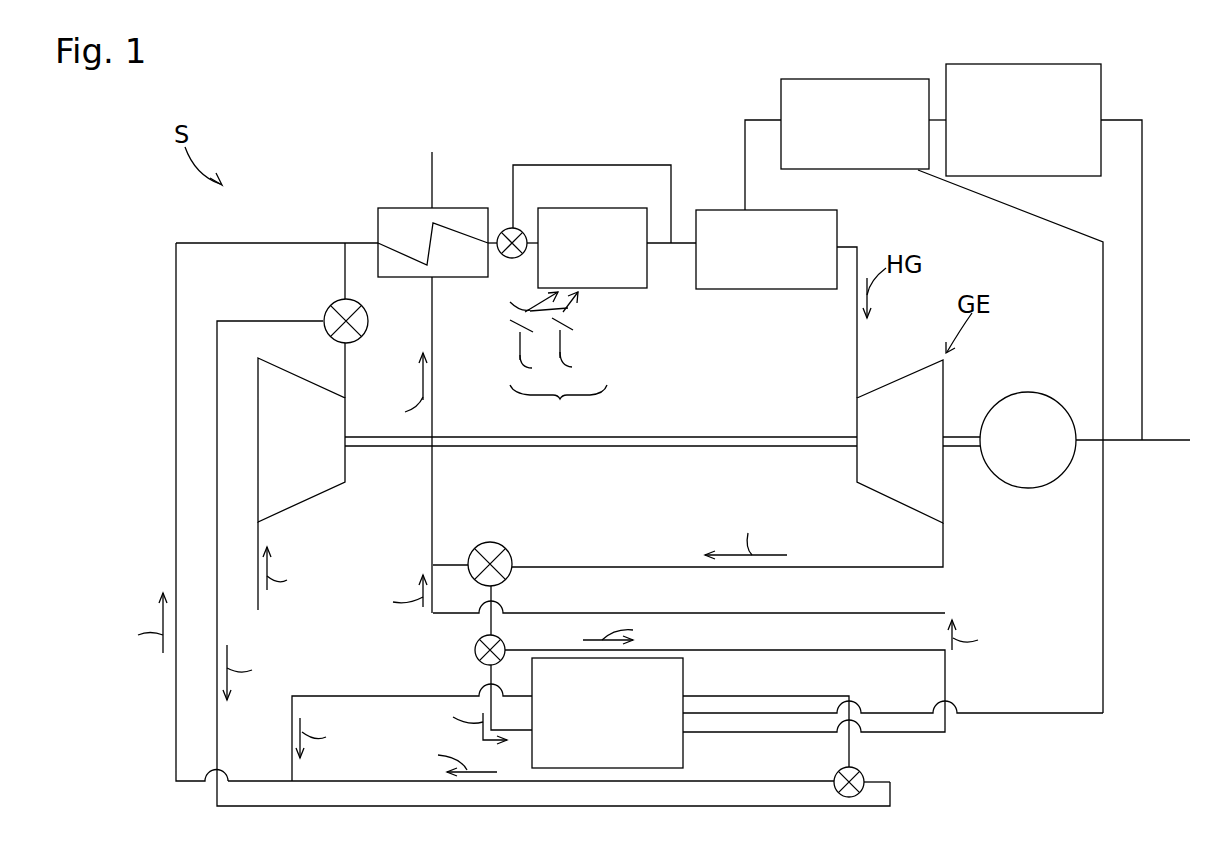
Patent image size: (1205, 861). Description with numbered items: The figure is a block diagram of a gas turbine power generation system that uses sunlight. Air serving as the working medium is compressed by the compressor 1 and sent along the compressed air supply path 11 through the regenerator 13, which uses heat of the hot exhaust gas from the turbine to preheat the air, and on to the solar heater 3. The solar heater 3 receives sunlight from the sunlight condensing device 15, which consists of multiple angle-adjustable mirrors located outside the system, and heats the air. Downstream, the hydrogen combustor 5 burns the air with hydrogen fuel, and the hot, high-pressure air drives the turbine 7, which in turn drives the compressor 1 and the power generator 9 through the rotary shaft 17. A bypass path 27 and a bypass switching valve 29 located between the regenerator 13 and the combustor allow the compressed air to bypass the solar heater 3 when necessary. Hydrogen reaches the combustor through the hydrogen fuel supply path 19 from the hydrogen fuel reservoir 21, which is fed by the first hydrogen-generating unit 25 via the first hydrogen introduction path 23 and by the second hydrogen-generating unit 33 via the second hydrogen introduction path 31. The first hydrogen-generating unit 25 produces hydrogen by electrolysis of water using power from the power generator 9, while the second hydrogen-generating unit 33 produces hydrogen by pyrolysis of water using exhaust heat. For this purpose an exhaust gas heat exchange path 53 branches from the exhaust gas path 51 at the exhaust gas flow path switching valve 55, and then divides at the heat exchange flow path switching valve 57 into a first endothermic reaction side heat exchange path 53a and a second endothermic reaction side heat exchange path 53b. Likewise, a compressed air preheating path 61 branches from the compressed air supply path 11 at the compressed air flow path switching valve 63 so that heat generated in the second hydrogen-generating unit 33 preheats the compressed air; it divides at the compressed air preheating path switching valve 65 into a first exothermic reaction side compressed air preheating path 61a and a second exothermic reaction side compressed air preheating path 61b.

The compressor 1 is at (313, 497).
The solar heater 3 is at (620, 288).
The hydrogen combustor 5 is at (783, 289).
The turbine 7 is at (907, 375).
The power generator 9 is at (1025, 492).
The compressed air supply path 11 is at (345, 372).
The regenerator 13 is at (378, 220).
The sunlight condensing device 15 is at (544, 358).
The rotary shaft 17 is at (730, 435).
The hydrogen fuel supply path 19 is at (745, 168).
The hydrogen fuel reservoir 21 is at (782, 98).
The first hydrogen introduction path 23 is at (938, 118).
The first hydrogen-generating unit 25 is at (1101, 93).
The bypass path 27 is at (567, 165).
The bypass switching valve 29 is at (507, 228).
The second hydrogen introduction path 31 is at (961, 187).
The second hydrogen-generating unit 33 is at (685, 752).
The exhaust gas path 51 is at (858, 566).
The exhaust gas heat exchange path 53 is at (492, 592).
The first endothermic reaction side heat exchange path 53a is at (710, 648).
The second endothermic reaction side heat exchange path 53b is at (490, 677).
The exhaust gas flow path switching valve 55 is at (500, 541).
The heat exchange flow path switching valve 57 is at (505, 638).
The compressed air preheating path 61 is at (265, 320).
The first exothermic reaction side compressed air preheating path 61a is at (753, 693).
The second exothermic reaction side compressed air preheating path 61b is at (788, 780).
The compressed air flow path switching valve 63 is at (368, 302).
The compressed air preheating path switching valve 65 is at (865, 770).